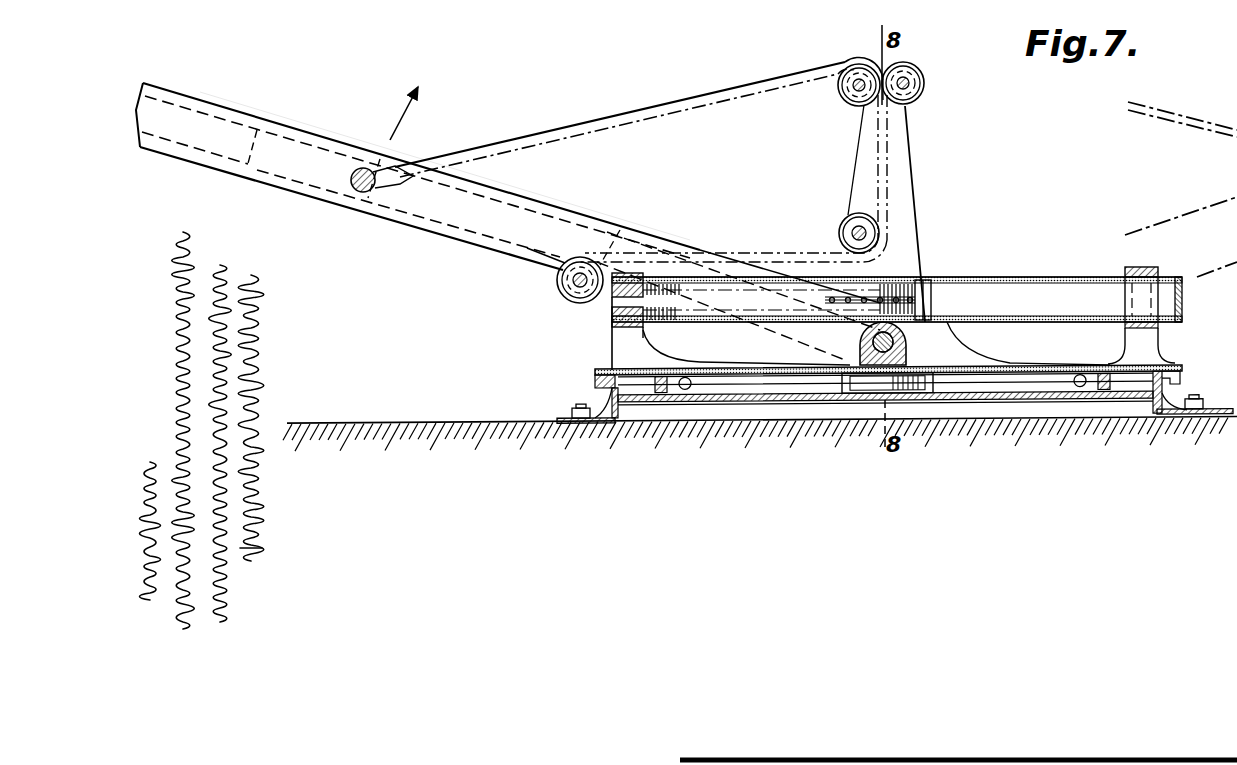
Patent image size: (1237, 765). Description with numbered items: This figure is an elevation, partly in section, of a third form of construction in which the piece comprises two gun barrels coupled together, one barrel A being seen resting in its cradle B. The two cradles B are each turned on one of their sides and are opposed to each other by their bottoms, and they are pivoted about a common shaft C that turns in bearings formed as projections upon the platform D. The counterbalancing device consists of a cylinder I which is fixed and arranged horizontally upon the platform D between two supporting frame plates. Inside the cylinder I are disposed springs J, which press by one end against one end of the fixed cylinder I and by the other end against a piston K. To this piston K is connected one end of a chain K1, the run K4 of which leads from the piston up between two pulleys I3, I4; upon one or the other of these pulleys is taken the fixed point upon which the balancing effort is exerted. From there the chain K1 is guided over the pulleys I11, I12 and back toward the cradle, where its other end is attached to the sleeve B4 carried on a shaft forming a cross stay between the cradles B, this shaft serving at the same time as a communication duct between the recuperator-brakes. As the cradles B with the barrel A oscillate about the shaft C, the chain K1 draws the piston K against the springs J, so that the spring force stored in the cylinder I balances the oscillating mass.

The arm A is at (265, 173).
The cradle B is at (303, 174).
The pivot pin B4 is at (365, 192).
The chain K1 is at (676, 106).
The pulley I3 is at (850, 98).
The pulley I4 is at (920, 93).
The pulley I12 is at (846, 231).
The pulley I11 is at (567, 297).
The rod K4 is at (908, 300).
The cylinder I is at (1050, 277).
The spring J is at (672, 325).
The piston K is at (933, 305).
The common shaft C is at (906, 342).
The platform D is at (1050, 369).